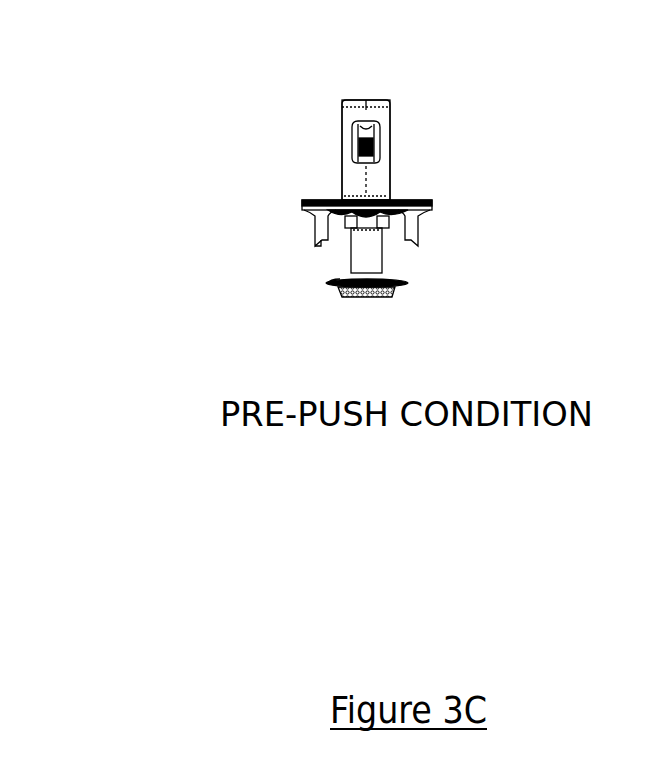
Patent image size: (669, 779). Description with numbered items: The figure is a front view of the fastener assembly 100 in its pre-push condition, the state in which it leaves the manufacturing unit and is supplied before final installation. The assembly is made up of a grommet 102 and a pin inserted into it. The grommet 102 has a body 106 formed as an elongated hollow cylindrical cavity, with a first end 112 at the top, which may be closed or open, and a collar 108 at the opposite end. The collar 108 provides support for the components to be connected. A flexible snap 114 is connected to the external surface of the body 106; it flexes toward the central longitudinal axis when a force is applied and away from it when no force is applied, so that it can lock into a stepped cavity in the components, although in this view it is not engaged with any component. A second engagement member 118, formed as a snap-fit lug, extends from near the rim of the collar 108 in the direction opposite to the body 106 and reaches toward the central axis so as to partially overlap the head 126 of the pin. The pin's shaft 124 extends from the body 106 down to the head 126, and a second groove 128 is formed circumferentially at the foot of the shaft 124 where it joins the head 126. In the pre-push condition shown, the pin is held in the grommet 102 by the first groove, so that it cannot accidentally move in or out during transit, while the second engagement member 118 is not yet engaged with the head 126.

The fastener assembly 100 is at (414, 86).
The grommet 102 is at (330, 140).
The body 106 is at (380, 177).
The collar 108 is at (340, 199).
The first end 112 is at (330, 100).
The flexible snap 114 is at (367, 141).
The second engagement member 118 is at (412, 232).
The shaft 124 is at (367, 254).
The head 126 is at (402, 286).
The second groove 128 is at (333, 282).